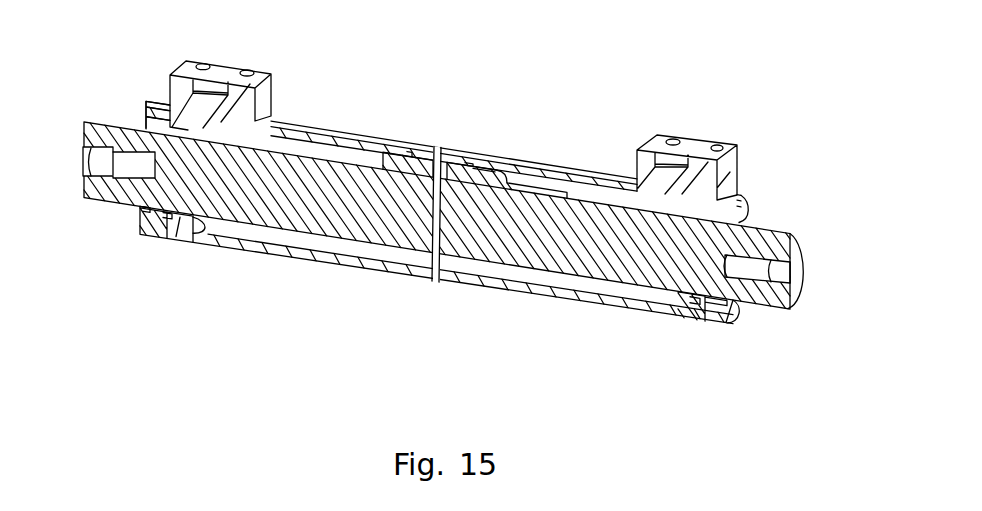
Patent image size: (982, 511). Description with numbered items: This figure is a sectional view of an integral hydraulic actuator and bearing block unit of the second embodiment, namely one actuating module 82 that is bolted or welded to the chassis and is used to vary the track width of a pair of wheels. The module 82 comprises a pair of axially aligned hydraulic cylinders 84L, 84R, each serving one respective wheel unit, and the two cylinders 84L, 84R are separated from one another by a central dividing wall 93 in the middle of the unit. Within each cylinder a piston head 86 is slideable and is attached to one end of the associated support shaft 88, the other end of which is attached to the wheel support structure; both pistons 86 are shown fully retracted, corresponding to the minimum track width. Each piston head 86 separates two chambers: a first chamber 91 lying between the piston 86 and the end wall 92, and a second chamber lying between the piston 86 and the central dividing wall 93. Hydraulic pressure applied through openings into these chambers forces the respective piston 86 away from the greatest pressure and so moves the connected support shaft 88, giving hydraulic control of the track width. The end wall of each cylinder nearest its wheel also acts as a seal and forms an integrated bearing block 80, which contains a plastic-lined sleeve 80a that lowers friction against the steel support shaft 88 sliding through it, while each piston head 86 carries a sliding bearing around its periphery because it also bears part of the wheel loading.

The bearing block 80 is at (168, 226).
The plastic-lined sleeve 80a is at (140, 207).
The actuating module 82 is at (437, 147).
The hydraulic cylinder 84L is at (591, 305).
The hydraulic cylinder 84R is at (335, 263).
The piston head 86 is at (398, 167).
The support shaft 88 is at (113, 140).
The first chamber 91 is at (279, 245).
The end wall 92 is at (210, 247).
The central dividing wall 93 is at (437, 283).